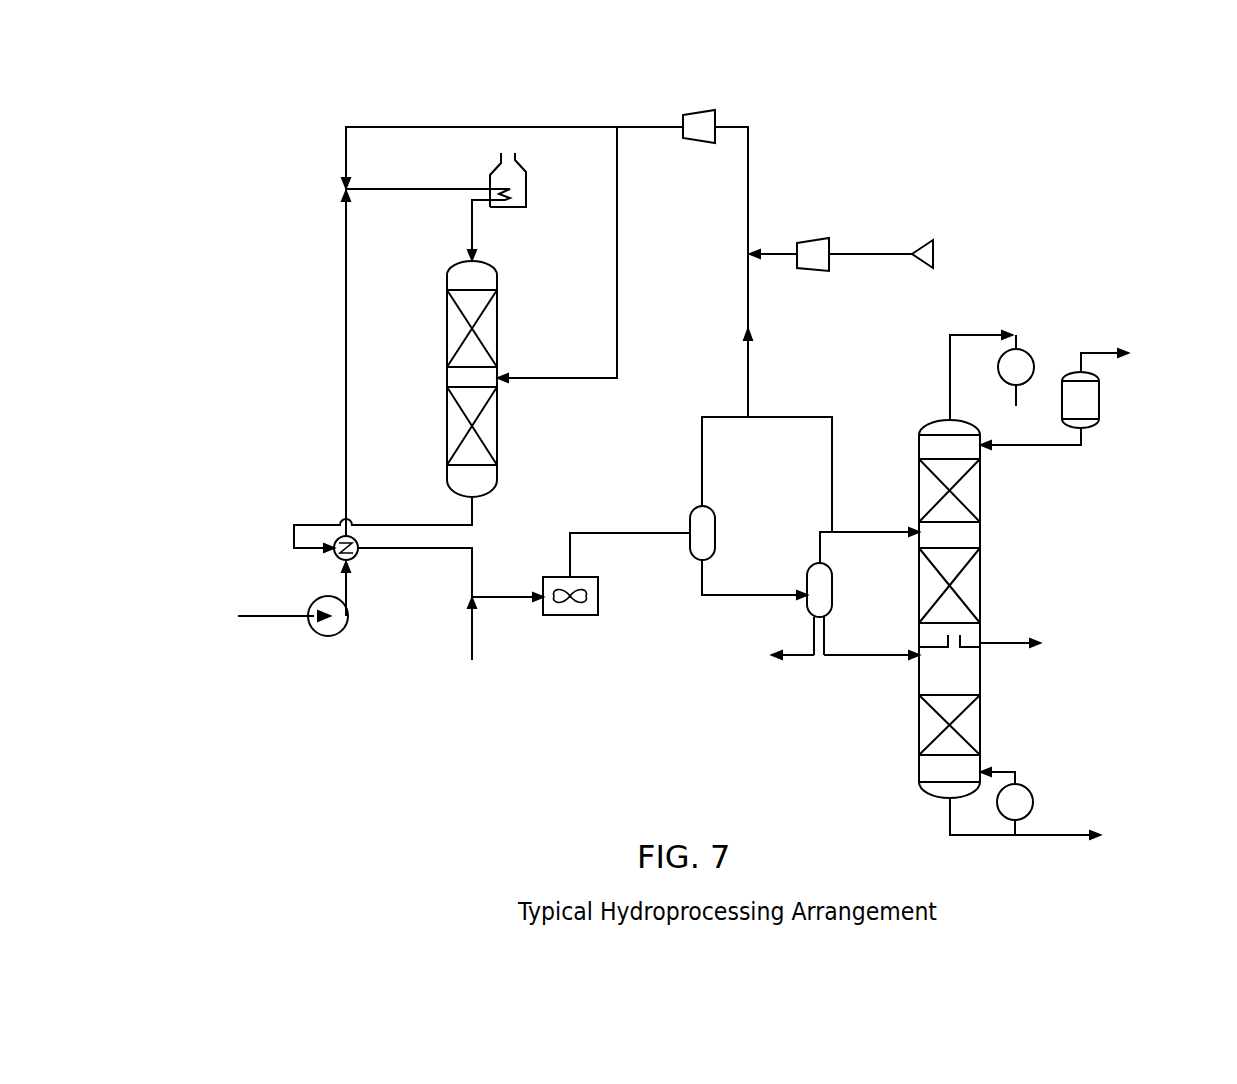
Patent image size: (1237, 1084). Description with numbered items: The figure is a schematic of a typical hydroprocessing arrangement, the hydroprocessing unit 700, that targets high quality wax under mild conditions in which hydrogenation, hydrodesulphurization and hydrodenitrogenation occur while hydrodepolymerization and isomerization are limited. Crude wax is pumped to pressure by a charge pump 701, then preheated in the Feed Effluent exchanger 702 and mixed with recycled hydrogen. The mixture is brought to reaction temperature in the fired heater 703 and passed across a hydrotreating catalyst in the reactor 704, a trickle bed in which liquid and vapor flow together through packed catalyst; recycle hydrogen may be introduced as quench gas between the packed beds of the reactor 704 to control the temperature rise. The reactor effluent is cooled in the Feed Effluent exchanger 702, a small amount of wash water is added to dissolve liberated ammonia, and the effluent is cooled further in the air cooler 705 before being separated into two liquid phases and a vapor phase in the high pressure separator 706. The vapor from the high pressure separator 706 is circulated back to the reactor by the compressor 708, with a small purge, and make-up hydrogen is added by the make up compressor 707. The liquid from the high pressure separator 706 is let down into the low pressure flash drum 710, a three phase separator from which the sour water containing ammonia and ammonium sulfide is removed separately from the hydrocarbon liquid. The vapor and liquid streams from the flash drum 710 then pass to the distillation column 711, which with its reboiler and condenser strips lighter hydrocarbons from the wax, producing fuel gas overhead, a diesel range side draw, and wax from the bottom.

The hydroprocessing unit 700 is at (309, 272).
The charge pump 701 is at (346, 650).
The Feed Effluent exchanger 702 is at (370, 561).
The fired heater 703 is at (486, 171).
The reactor 704 is at (428, 378).
The air cooler 705 is at (571, 611).
The high pressure separator 706 is at (676, 530).
The make up compressor 707 is at (816, 236).
The compressor 708 is at (753, 130).
The low pressure flash drum 710 is at (845, 590).
The distillation column 711 is at (977, 609).